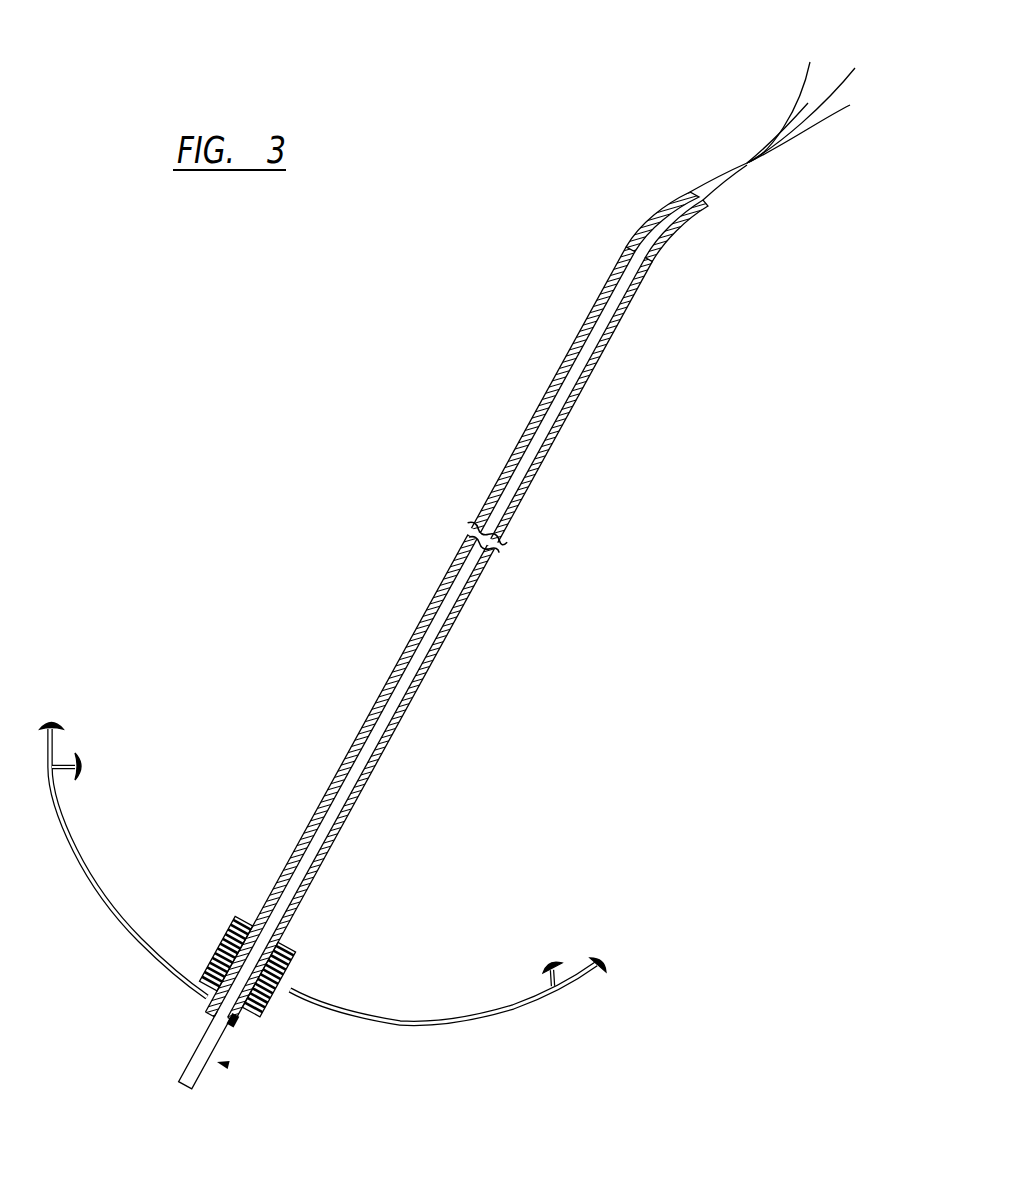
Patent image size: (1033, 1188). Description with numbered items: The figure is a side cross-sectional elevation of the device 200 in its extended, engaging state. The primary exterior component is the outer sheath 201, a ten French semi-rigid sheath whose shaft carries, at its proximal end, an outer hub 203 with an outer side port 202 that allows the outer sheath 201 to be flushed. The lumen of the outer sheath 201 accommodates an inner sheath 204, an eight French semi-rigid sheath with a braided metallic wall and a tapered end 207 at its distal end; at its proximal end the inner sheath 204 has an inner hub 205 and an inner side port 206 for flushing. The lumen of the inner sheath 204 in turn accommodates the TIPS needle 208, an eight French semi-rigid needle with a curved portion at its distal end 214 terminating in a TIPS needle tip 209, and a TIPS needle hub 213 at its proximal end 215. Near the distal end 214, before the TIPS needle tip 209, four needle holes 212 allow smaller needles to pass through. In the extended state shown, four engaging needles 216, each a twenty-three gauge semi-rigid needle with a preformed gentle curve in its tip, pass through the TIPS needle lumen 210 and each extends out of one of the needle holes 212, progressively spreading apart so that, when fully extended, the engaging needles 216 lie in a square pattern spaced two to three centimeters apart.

The device 200 is at (706, 408).
The outer sheath 201 is at (480, 586).
The outer side port 202 is at (605, 961).
The outer hub 203 is at (283, 943).
The inner sheath 204 is at (440, 640).
The inner hub 205 is at (233, 1020).
The inner side port 206 is at (90, 898).
The tapered end 207 is at (631, 210).
The TIPS needle 208 is at (429, 637).
The TIPS needle tip 209 is at (757, 166).
The TIPS needle lumen 210 is at (419, 632).
The needle holes 212 is at (746, 163).
The TIPS needle hub 213 is at (205, 1050).
The distal end 214 is at (786, 173).
The proximal end 215 is at (228, 1065).
The engaging needles 216 is at (790, 118).